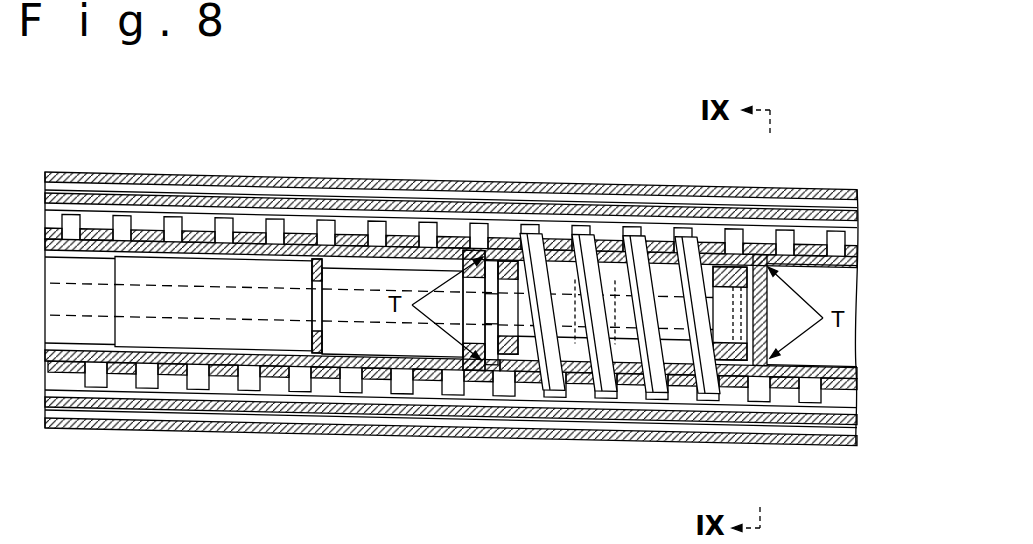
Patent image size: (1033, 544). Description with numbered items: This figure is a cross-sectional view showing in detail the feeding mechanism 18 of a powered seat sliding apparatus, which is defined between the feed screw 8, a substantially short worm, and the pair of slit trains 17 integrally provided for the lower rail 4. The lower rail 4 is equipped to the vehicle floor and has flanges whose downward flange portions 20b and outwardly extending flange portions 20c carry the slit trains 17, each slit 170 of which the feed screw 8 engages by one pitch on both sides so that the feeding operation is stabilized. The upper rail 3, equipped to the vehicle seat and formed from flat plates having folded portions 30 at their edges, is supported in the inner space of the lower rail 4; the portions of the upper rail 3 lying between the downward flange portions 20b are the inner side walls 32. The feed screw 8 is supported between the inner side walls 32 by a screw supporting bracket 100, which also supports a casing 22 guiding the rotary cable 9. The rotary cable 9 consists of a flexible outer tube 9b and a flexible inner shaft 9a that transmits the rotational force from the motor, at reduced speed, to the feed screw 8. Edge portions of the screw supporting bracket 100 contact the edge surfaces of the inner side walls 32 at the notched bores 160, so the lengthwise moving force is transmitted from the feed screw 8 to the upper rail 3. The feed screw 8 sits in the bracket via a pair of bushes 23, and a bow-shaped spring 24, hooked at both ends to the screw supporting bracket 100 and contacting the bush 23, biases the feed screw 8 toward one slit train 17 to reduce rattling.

The upper rail 3 is at (552, 207).
The lower rail 4 is at (233, 175).
The feed screw 8 is at (638, 362).
The rotary cable 9 is at (70, 250).
The inner shaft 9a is at (600, 420).
The outer tube 9b is at (93, 332).
The slit trains 17 is at (129, 213).
The feeding mechanism 18 is at (670, 172).
The downward flange portions 20b is at (355, 240).
The outwardly extending flange portions 20c is at (297, 213).
The casing 22 is at (259, 340).
The bushes 23 is at (510, 272).
The spring 24 is at (743, 358).
The folded portions 30 is at (790, 212).
The inner side walls 32 is at (165, 257).
The screw supporting bracket 100 is at (760, 256).
The notched bores 160 is at (505, 373).
The slit 170 is at (433, 240).